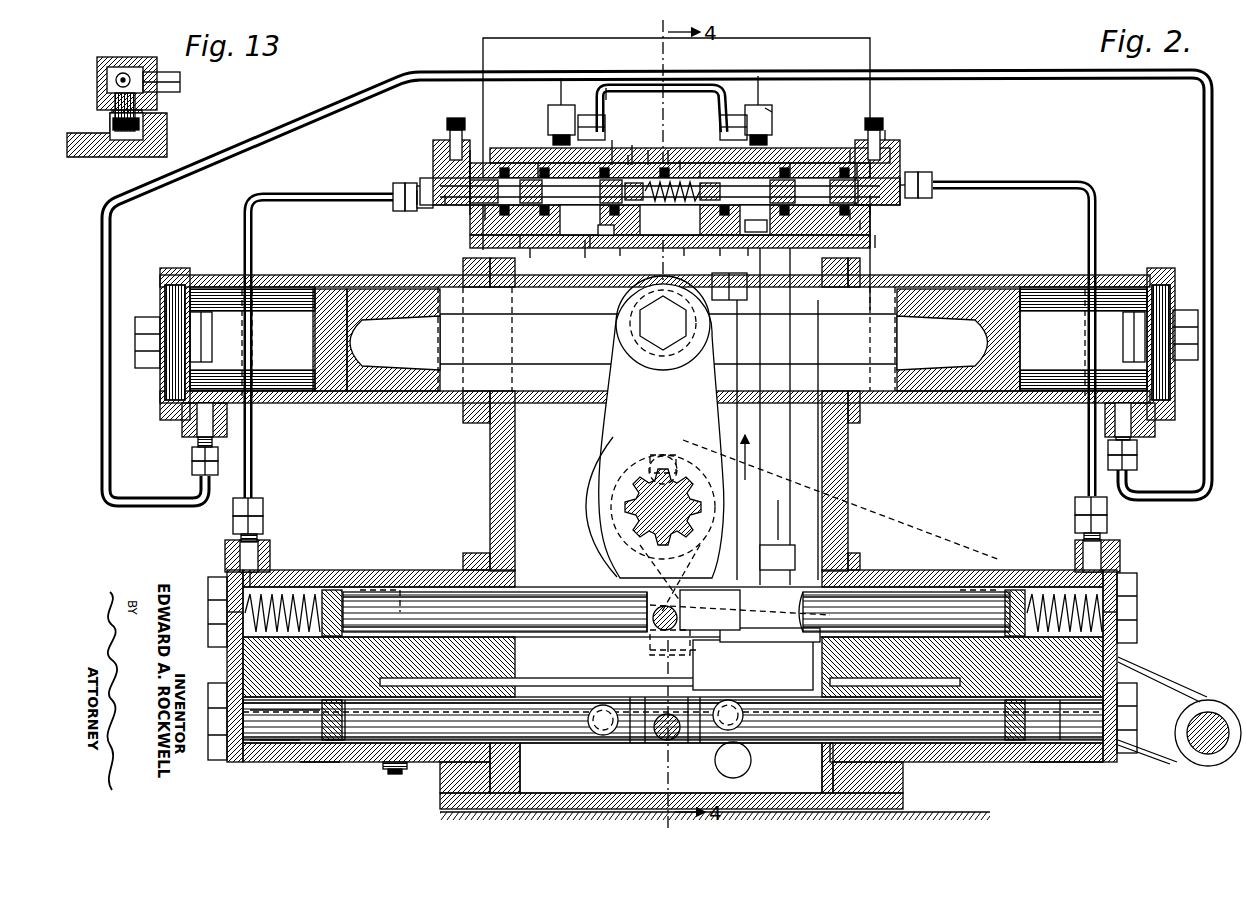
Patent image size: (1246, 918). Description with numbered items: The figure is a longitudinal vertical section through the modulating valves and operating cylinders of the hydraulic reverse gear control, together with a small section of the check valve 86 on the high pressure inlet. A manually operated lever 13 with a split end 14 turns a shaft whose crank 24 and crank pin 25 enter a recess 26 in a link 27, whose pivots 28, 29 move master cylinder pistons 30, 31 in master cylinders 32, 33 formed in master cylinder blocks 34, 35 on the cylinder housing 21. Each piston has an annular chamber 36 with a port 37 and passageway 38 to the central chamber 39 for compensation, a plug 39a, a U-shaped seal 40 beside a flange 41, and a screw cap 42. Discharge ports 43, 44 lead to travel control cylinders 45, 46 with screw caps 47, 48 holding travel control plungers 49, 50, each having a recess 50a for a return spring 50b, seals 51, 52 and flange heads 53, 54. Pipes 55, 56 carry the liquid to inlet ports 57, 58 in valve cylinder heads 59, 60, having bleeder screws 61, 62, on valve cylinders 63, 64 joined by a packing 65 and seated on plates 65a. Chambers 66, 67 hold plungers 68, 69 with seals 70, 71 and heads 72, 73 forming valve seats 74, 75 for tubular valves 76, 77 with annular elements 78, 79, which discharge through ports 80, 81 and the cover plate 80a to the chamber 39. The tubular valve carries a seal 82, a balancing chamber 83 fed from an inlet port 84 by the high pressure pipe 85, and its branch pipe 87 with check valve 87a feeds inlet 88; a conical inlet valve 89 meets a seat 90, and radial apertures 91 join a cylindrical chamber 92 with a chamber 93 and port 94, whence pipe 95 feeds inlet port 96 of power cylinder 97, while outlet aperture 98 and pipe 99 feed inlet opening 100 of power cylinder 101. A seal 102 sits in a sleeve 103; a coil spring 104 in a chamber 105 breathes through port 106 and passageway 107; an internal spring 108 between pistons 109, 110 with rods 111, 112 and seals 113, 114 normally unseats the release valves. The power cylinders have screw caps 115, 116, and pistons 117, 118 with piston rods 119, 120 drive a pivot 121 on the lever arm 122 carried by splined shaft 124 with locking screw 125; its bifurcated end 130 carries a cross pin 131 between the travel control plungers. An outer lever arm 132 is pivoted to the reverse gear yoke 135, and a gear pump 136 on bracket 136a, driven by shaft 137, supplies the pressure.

In FIG. 2, the manually operated lever 13 is at (640, 545).
In FIG. 2, the split end 14 is at (722, 663).
In FIG. 2, the cylinder housing 21 is at (440, 814).
In FIG. 2, the crank 24 is at (700, 660).
In FIG. 2, the crank pin 25 is at (682, 742).
In FIG. 2, the recess 26 is at (662, 741).
In FIG. 2, the link 27 is at (640, 742).
In FIG. 2, the pivot 28 is at (600, 736).
In FIG. 2, the pivot 29 is at (742, 768).
In FIG. 2, the master cylinder piston 30 is at (425, 762).
In FIG. 2, the master cylinder piston 31 is at (920, 742).
In FIG. 2, the master cylinder 32 is at (275, 744).
In FIG. 2, the master cylinder 33 is at (1085, 750).
In FIG. 2, the master cylinder block 34 is at (310, 764).
In FIG. 2, the master cylinder block 35 is at (1045, 764).
In FIG. 2, the annular chamber 36 is at (360, 742).
In FIG. 2, the port 37 is at (310, 702).
In FIG. 2, the passageway 38 is at (515, 676).
In FIG. 2, the central chamber 39 is at (545, 800).
In FIG. 2, the plug 39a is at (395, 775).
In FIG. 2, the U-shaped seal 40 is at (330, 744).
In FIG. 2, the flange 41 is at (285, 720).
In FIG. 2, the screw cap 42 is at (215, 760).
In FIG. 2, the discharge port 43 is at (238, 672).
In FIG. 2, the discharge port 44 is at (1140, 660).
In FIG. 2, the travel control cylinder 45 is at (310, 590).
In FIG. 2, the travel control cylinder 46 is at (1137, 585).
In FIG. 2, the screw cap 47 is at (207, 578).
In FIG. 2, the screw cap 48 is at (1135, 620).
In FIG. 2, the travel control plunger 49 is at (413, 587).
In FIG. 2, the travel control plunger 50 is at (955, 618).
In FIG. 2, the recess 50a is at (375, 575).
In FIG. 2, the plunger return spring 50b is at (292, 568).
In FIG. 2, the U-shaped rubber seal 51 is at (348, 588).
In FIG. 2, the U-shaped rubber seal 52 is at (1010, 590).
In FIG. 2, the flange head 53 is at (207, 632).
In FIG. 2, the flange head 54 is at (1035, 590).
In FIG. 2, the pipe 55 is at (305, 193).
In FIG. 2, the pipe 56 is at (1086, 476).
In FIG. 2, the inlet port 57 is at (430, 190).
In FIG. 2, the inlet port 58 is at (905, 195).
In FIG. 2, the valve cylinder head 59 is at (430, 160).
In FIG. 2, the valve cylinder head 60 is at (902, 162).
In FIG. 2, the air bleeder screw 61 is at (452, 124).
In FIG. 2, the air bleeder screw 62 is at (895, 150).
In FIG. 2, the valve cylinder 63 is at (497, 150).
In FIG. 2, the valve cylinder 64 is at (880, 124).
In FIG. 2, the packing 65 is at (690, 165).
In FIG. 2, the plates 65a is at (860, 226).
In FIG. 2, the chamber 66 is at (450, 200).
In FIG. 2, the chamber 67 is at (870, 200).
In FIG. 2, the plunger 68 is at (470, 210).
In FIG. 2, the plunger 69 is at (870, 212).
In FIG. 2, the U-shaped seal 70 is at (471, 146).
In FIG. 2, the U-shaped seal 71 is at (857, 165).
In FIG. 2, the head 72 is at (485, 215).
In FIG. 2, the head 73 is at (850, 215).
In FIG. 2, the valve seat 74 is at (500, 236).
In FIG. 2, the valve seat 75 is at (848, 150).
In FIG. 2, the tubular valve 76 is at (545, 249).
In FIG. 2, the tubular valve 77 is at (757, 292).
In FIG. 2, the annular valve element 78 is at (520, 162).
In FIG. 2, the annular valve element 79 is at (786, 292).
In FIG. 2, the discharge port 80 is at (530, 262).
In FIG. 2, the cover plate 80a is at (585, 262).
In FIG. 2, the port 81 is at (805, 292).
In FIG. 2, the annular seal 82 is at (539, 163).
In FIG. 2, the valve-balancing chamber 83 is at (522, 238).
In FIG. 2, the inlet port 84 is at (592, 238).
In FIG. 2, the high pressure hydraulic liquid inlet pipe 85 is at (752, 439).
In FIG. 13, the check valve 86 is at (93, 70).
In FIG. 2, the check valve 86 is at (556, 104).
In FIG. 13, the branch high pressure inlet pipe 87 is at (182, 82).
In FIG. 2, the branch high pressure inlet pipe 87 is at (748, 104).
In FIG. 2, the check valve 87a is at (774, 106).
In FIG. 2, the inlet 88 is at (790, 165).
In FIG. 2, the conical inlet valve 89 is at (580, 100).
In FIG. 2, the valve seat 90 is at (590, 116).
In FIG. 2, the radial apertures 91 is at (612, 140).
In FIG. 2, the cylindrical chamber 92 is at (585, 248).
In FIG. 2, the chamber 93 is at (632, 148).
In FIG. 2, the port 94 is at (606, 86).
In FIG. 2, the pipe 95 is at (1063, 70).
In FIG. 2, the inlet port 96 is at (1132, 420).
In FIG. 2, the power cylinder 97 is at (1020, 404).
In FIG. 2, the delivery outlet aperture 98 is at (758, 100).
In FIG. 2, the pipe 99 is at (437, 71).
In FIG. 2, the inlet opening 100 is at (200, 415).
In FIG. 2, the power cylinder 101 is at (282, 404).
In FIG. 2, the annular seal 102 is at (648, 150).
In FIG. 2, the sleeve 103 is at (628, 155).
In FIG. 2, the coil spring 104 is at (680, 162).
In FIG. 2, the chamber 105 is at (668, 160).
In FIG. 2, the port 106 is at (720, 258).
In FIG. 2, the passageway 107 is at (684, 258).
In FIG. 2, the internal spring 108 is at (700, 172).
In FIG. 2, the piston 109 is at (712, 285).
In FIG. 2, the piston 110 is at (749, 258).
In FIG. 2, the piston rod 111 is at (606, 237).
In FIG. 2, the piston rod 112 is at (756, 226).
In FIG. 2, the rubber seal 113 is at (620, 256).
In FIG. 2, the rubber seal 114 is at (712, 190).
In FIG. 2, the screw cap 115 is at (1162, 372).
In FIG. 2, the screw cap 116 is at (147, 317).
In FIG. 2, the piston 117 is at (975, 382).
In FIG. 2, the piston 118 is at (355, 382).
In FIG. 2, the piston rod 119 is at (539, 339).
In FIG. 2, the piston rod 120 is at (793, 339).
In FIG. 2, the pivot 121 is at (663, 323).
In FIG. 2, the lever arm 122 is at (612, 422).
In FIG. 2, the splined shaft 124 is at (663, 507).
In FIG. 2, the locking screw 125 is at (690, 425).
In FIG. 2, the bifurcated end 130 is at (620, 570).
In FIG. 2, the cross pin 131 is at (655, 632).
In FIG. 2, the lever arm 132 is at (1160, 758).
In FIG. 2, the yoke 135 is at (1209, 766).
In FIG. 2, the gear pump 136 is at (830, 616).
In FIG. 2, the bracket 136a is at (660, 430).
In FIG. 2, the shaft 137 is at (778, 520).